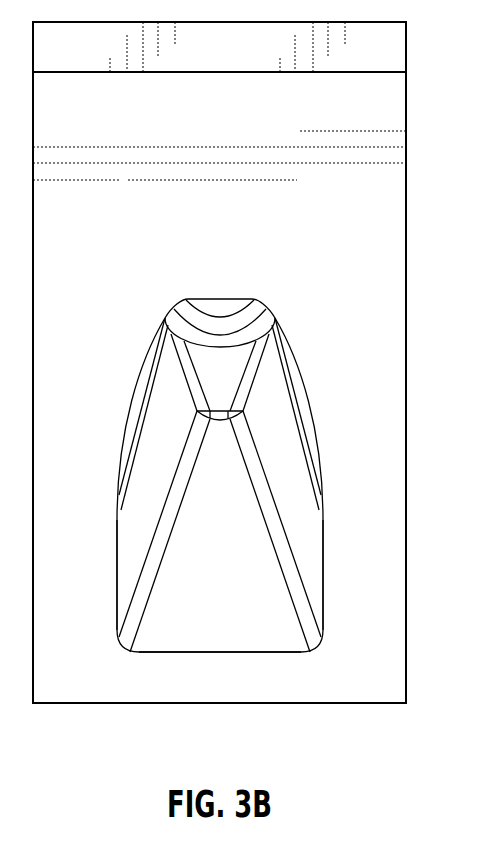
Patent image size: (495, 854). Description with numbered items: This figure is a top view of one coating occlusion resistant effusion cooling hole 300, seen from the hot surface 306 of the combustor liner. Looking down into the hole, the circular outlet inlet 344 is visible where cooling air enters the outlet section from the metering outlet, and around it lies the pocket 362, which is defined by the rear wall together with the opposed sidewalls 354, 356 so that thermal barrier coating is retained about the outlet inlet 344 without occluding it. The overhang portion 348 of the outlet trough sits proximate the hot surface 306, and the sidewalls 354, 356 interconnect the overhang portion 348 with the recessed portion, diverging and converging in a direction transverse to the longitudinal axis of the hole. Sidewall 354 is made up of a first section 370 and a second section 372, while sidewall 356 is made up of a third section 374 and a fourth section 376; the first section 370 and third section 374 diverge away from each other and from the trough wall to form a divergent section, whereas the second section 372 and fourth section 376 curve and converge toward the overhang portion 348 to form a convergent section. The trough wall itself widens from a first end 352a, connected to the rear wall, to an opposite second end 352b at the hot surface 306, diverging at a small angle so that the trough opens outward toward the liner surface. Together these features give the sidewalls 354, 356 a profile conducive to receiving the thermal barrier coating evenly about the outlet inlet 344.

The effusion cooling hole 300 is at (182, 429).
The hot surface 306 is at (382, 123).
The outlet inlet 344 is at (240, 299).
The overhang portion 348 is at (218, 299).
The pocket 362 is at (279, 321).
The fourth section 376 is at (287, 348).
The sidewall 356 is at (293, 380).
The second section 372 is at (150, 360).
The sidewall 354 is at (119, 387).
The first section 370 is at (137, 523).
The third section 374 is at (307, 528).
The first end 352a is at (224, 418).
The second end 352b is at (237, 653).